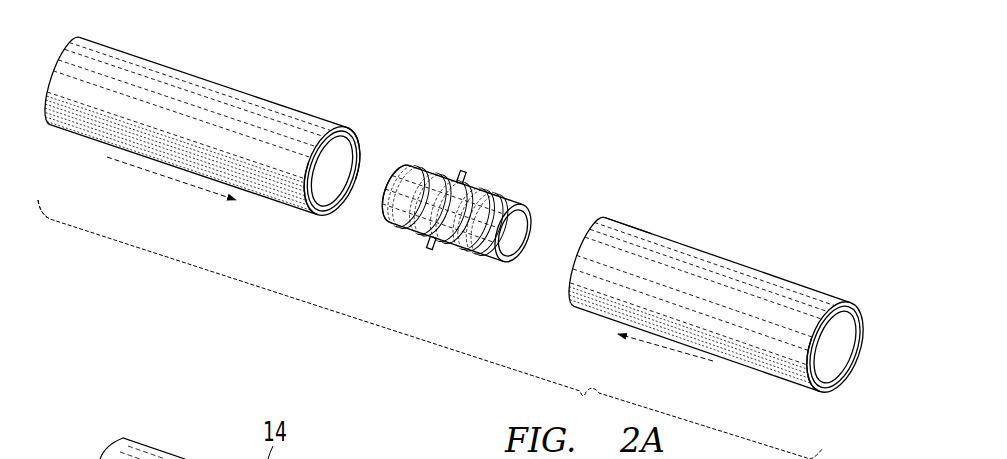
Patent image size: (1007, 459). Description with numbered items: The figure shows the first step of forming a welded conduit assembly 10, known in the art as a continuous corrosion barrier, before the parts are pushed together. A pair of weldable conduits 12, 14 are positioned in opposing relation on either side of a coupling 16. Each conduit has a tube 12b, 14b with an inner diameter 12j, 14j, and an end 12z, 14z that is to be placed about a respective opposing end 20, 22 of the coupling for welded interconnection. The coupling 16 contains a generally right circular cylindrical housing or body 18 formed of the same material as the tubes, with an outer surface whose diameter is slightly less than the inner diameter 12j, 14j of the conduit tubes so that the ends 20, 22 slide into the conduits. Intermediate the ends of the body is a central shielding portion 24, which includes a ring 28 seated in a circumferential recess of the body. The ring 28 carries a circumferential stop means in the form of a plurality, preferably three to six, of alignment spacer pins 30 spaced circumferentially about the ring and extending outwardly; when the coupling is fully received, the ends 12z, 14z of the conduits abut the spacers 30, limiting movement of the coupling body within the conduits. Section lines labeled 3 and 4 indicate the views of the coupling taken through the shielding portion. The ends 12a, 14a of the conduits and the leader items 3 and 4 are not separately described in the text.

The conduit assembly 10 is at (427, 101).
The conduit 12 is at (708, 255).
The end of second tube 12a is at (852, 302).
The tube 12b is at (845, 380).
The inner diameter 12j is at (840, 360).
The end of conduit 12z is at (604, 213).
The conduit 14 is at (188, 78).
The end of first tube 14a is at (313, 216).
The tube 14b is at (347, 128).
The inner diameter 14j is at (339, 183).
The end of conduit 14z is at (365, 156).
The coupling 16 is at (546, 162).
The coupling body 18 is at (392, 226).
The end of coupling body 20 is at (531, 232).
The end of coupling body 22 is at (384, 198).
The central shielding portion 24 is at (478, 176).
The ring 28 is at (452, 250).
The spacer pins 30 is at (456, 172).
The section line 3- 3 is at (447, 130).
The section line 4- 4 is at (370, 180).